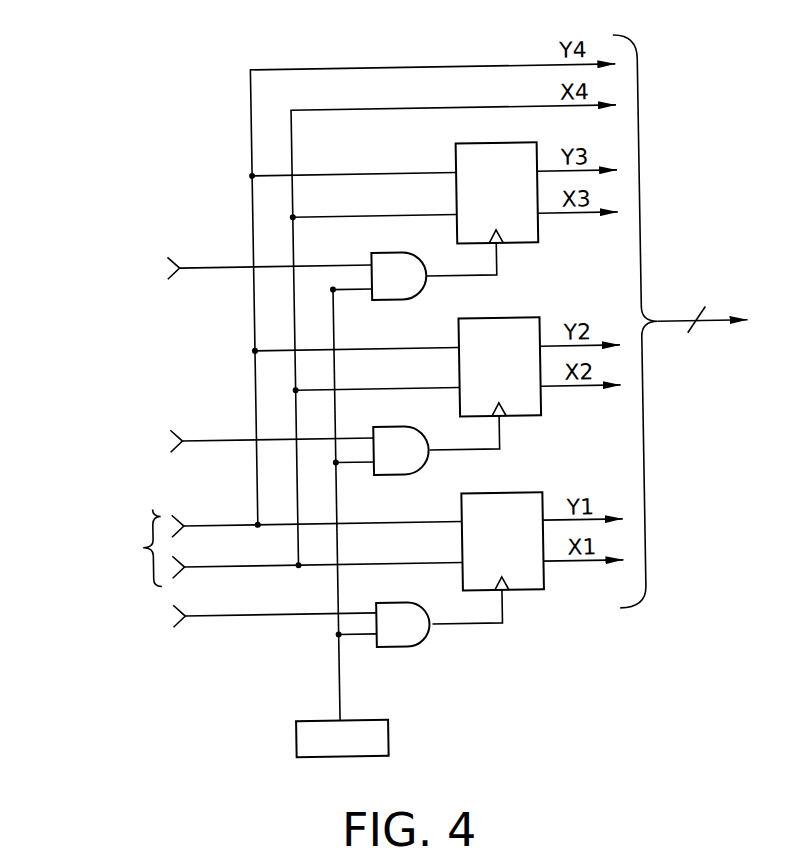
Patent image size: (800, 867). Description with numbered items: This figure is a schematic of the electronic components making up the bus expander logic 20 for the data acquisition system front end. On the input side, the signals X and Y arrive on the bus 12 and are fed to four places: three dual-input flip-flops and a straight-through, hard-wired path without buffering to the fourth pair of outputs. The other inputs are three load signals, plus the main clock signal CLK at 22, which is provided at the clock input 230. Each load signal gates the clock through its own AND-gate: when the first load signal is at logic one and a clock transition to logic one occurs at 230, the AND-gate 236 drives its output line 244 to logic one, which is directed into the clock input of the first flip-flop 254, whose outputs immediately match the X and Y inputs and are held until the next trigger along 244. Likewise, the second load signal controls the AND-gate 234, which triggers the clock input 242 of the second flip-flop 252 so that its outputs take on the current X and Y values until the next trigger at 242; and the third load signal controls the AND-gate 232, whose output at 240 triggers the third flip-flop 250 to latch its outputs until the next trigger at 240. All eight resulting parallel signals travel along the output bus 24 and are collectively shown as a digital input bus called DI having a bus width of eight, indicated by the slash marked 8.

The bus expander logic 20 is at (172, 125).
The bus 12 is at (140, 543).
The main clock signal CLK 22 is at (336, 755).
The clock input 230 is at (334, 673).
The AND-gate 232 is at (394, 252).
The AND-gate 234 is at (382, 426).
The AND-gate 236 is at (381, 602).
The AND-gate output to FF3 clock input 240 is at (500, 258).
The clock input of flip-flop FF2 242 is at (499, 433).
The AND-gate output to FF1 clock input 244 is at (499, 606).
The flip-flop FF3 250 is at (470, 144).
The flip-flop FF2 252 is at (496, 319).
The flip-flop FF1 254 is at (495, 494).
The output bus 24 is at (606, 634).
The bus width of digital input bus DI 8 is at (716, 307).